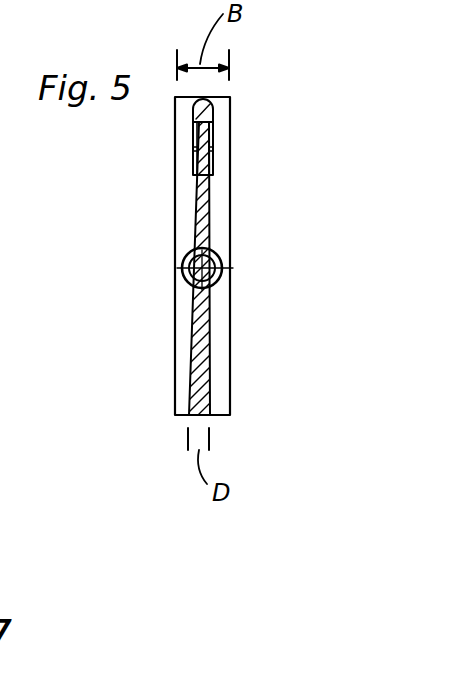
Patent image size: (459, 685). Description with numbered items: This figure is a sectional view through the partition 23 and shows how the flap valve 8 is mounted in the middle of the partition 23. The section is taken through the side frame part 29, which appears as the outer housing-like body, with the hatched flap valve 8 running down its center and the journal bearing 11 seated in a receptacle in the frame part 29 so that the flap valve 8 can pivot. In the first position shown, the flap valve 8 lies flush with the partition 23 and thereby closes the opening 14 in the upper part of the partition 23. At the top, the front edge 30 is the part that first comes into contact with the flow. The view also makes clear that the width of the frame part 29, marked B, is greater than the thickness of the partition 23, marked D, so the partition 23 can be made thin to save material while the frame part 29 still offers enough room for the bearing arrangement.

The flap valve 8 is at (209, 208).
The journal bearing 11 is at (217, 262).
The opening 14 is at (213, 133).
The partition 23 is at (203, 363).
The frame part 29 is at (220, 328).
The front edge 30 is at (211, 99).